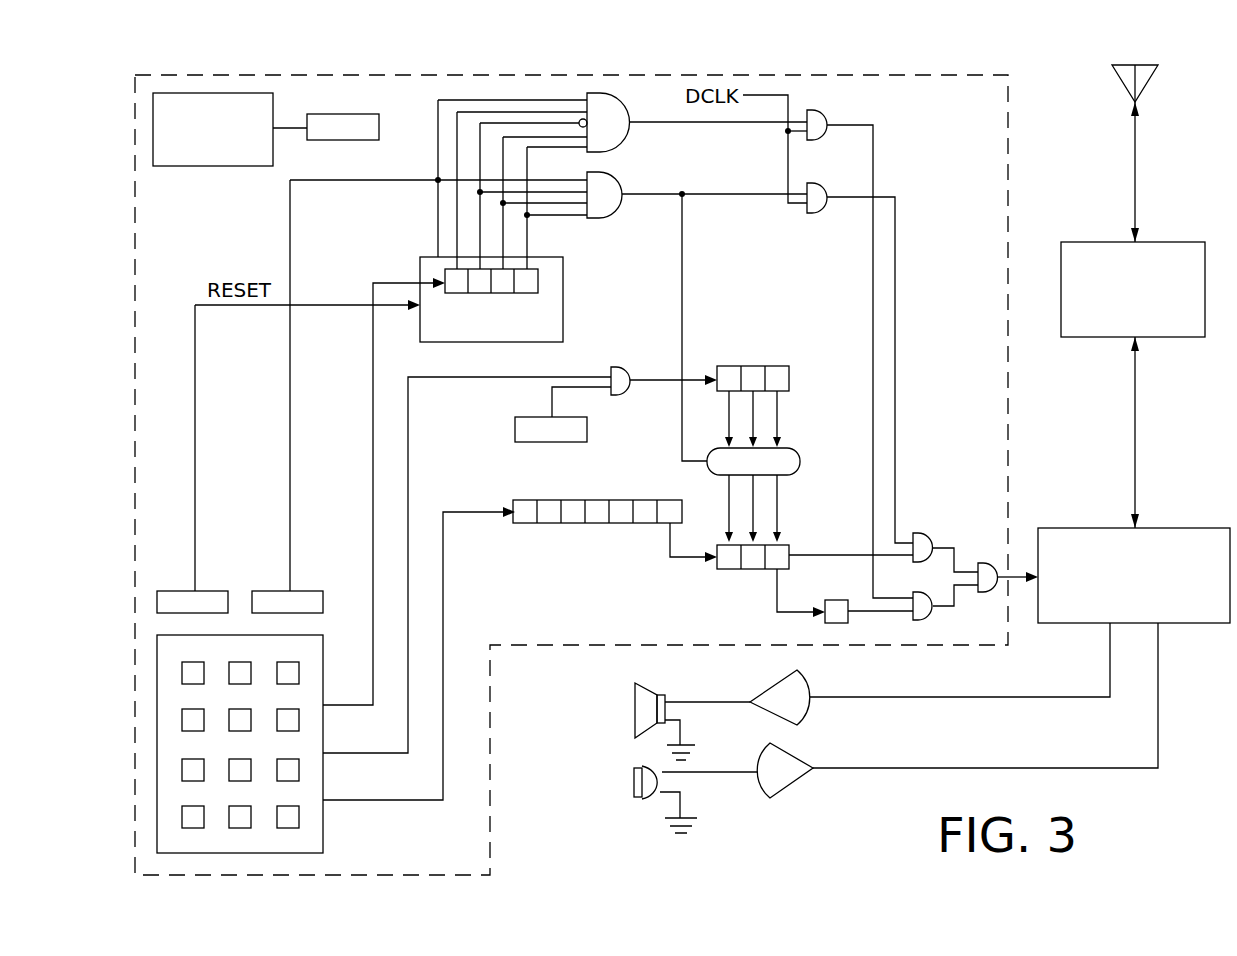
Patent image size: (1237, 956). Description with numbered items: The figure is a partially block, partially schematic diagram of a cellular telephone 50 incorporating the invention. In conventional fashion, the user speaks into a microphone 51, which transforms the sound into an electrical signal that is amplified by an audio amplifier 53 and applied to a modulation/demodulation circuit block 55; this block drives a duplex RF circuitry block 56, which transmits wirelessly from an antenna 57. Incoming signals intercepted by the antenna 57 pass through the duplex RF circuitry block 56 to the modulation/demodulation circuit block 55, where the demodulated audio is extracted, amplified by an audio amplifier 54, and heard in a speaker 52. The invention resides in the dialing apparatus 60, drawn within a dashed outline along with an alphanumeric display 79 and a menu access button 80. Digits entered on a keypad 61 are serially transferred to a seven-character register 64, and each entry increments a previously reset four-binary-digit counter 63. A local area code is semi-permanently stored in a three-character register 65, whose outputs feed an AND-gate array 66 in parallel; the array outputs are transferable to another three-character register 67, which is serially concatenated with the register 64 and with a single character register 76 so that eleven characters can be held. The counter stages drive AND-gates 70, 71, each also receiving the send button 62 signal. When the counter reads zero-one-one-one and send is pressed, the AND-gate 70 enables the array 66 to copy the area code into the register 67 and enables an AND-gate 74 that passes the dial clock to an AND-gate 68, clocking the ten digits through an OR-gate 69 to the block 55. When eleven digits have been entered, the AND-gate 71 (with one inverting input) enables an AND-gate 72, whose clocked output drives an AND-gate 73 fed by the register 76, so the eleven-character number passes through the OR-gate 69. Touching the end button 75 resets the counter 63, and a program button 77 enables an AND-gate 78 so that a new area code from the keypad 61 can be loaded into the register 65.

The cellular telephone 50 is at (1086, 426).
The microphone 51 is at (632, 783).
The speaker 52 is at (635, 700).
The audio amplifier 53 is at (800, 782).
The audio amplifier 54 is at (787, 680).
The modulation/demodulation circuit block 55 is at (1158, 528).
The duplex RF circuitry block 56 is at (1152, 242).
The antenna 57 is at (1148, 82).
The dialing apparatus 60 is at (1015, 172).
The keypad 61 is at (323, 828).
The send button 62 is at (305, 591).
The four-binary-digit counter 63 is at (563, 283).
The seven-character register 64 is at (580, 523).
The three-character register 65 is at (732, 366).
The AND-gate array 66 is at (800, 455).
The three-character register 67 is at (750, 569).
The AND-gate 68 is at (925, 533).
The OR-gate 69 is at (985, 563).
The AND-gate 70 is at (608, 218).
The AND-gate 71 is at (613, 152).
The AND-gate 72 is at (820, 112).
The AND-gate 73 is at (930, 615).
The AND-gate 74 is at (824, 208).
The end button 75 is at (215, 591).
The single character register 76 is at (832, 624).
The program button 77 is at (515, 431).
The AND-gate 78 is at (627, 370).
The alphanumeric display 79 is at (184, 166).
The menu access button 80 is at (346, 140).